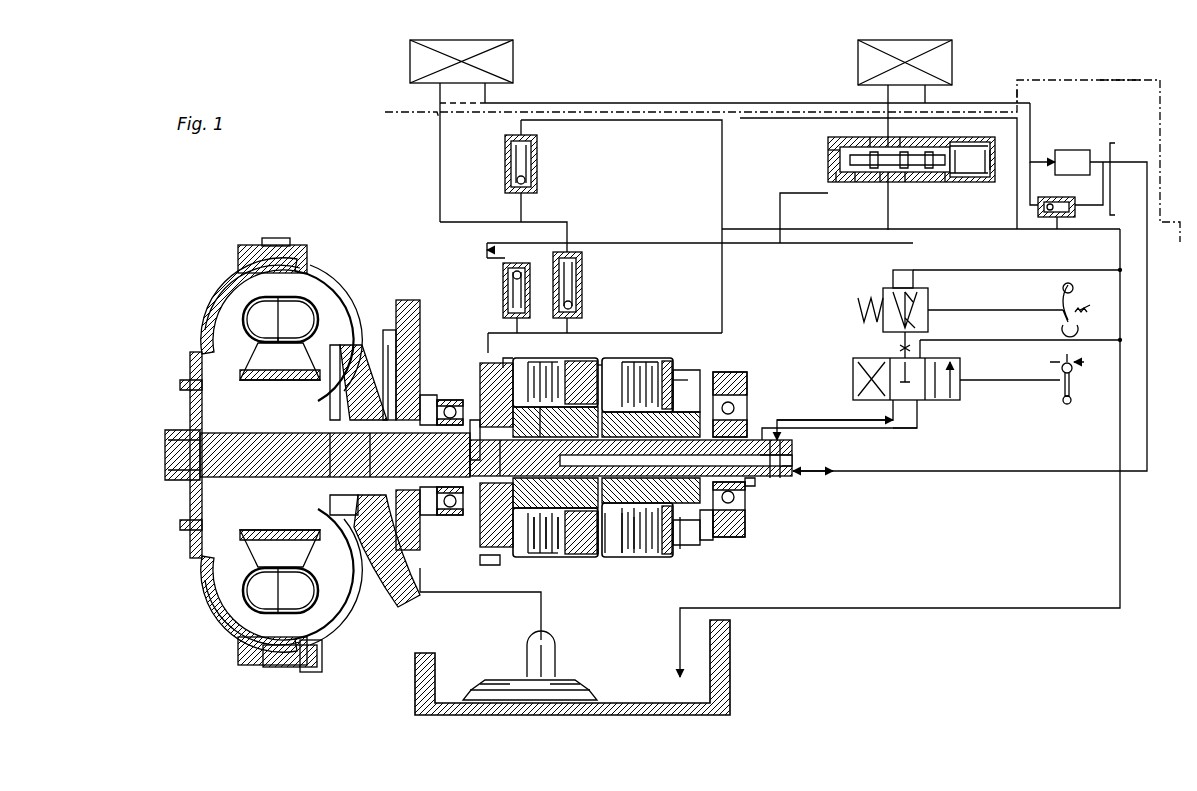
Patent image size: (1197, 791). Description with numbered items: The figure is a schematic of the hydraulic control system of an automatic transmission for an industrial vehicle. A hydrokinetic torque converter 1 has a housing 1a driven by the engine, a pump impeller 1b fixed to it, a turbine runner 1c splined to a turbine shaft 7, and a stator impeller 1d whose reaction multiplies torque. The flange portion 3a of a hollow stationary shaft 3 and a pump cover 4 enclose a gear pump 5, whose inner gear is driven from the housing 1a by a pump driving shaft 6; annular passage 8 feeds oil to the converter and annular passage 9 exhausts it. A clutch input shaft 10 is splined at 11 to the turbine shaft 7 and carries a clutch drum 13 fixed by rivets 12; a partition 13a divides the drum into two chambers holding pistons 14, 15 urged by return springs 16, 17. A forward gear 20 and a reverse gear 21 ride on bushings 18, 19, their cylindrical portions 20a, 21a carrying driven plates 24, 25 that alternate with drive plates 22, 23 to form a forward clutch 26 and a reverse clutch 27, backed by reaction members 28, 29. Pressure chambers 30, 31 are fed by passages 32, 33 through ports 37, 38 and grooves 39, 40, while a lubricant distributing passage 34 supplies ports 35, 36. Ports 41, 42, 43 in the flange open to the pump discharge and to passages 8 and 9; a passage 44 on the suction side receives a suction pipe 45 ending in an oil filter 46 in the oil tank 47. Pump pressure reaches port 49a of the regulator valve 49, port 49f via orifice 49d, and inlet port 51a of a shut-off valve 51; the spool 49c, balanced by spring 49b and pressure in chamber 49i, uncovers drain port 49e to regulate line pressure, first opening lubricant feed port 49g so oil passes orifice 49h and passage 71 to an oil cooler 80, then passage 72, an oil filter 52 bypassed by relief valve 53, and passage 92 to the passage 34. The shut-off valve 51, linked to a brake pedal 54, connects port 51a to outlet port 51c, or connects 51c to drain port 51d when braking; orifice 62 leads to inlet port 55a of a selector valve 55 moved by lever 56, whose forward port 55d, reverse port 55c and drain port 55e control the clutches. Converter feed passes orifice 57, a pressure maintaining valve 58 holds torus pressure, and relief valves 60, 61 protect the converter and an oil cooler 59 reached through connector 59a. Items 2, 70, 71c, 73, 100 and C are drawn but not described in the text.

The hydrokinetic torque converter 1 is at (275, 242).
The converter housing 1a is at (305, 262).
The pump impeller 1b is at (318, 289).
The turbine runner 1c is at (240, 298).
The stator impeller 1d is at (269, 370).
The turbine hub 2 is at (260, 556).
The hollow stationary shaft 3 is at (352, 410).
The flange portion 3a is at (408, 302).
The pump cover 4 is at (400, 300).
The gear pump 5 is at (390, 340).
The pump driving shaft 6 is at (388, 415).
The turbine shaft 7 is at (271, 460).
The annular passage 8 is at (382, 455).
The annular passage 9 is at (339, 455).
The clutch input shaft 10 is at (447, 464).
The spline 11 is at (481, 458).
The rivets 12 is at (605, 560).
The clutch drum 13 is at (618, 558).
The partition 13a is at (588, 560).
The piston 14 is at (575, 555).
The piston 15 is at (640, 560).
The return spring 16 is at (490, 545).
The return spring 17 is at (678, 540).
The bushing 18 is at (492, 358).
The bushing 19 is at (700, 540).
The forward gear 20 is at (500, 555).
The cylindrical portion 20a is at (480, 535).
The reverse gear 21 is at (720, 540).
The cylindrical portion 21a is at (668, 395).
The drive plates 22 is at (560, 365).
The drive plates 23 is at (640, 360).
The driven plates 24 is at (545, 405).
The driven plates 25 is at (745, 410).
The forward clutch 26 is at (535, 555).
The reverse clutch 27 is at (655, 558).
The reaction member 28 is at (520, 362).
The reaction member 29 is at (680, 380).
The hydraulic pressure chamber 30 is at (603, 333).
The hydraulic pressure chamber 31 is at (608, 362).
The hydraulic passage 32 is at (800, 470).
The hydraulic passage 33 is at (800, 428).
The lubricant distributing passage 34 is at (795, 475).
The port 35 is at (510, 458).
The port 36 is at (545, 560).
The port 37 is at (777, 480).
The port 38 is at (795, 450).
The circumferential groove 39 is at (743, 480).
The circumferential groove 40 is at (790, 480).
The port 41 is at (420, 395).
The port 42 is at (440, 400).
The port 43 is at (450, 400).
The passage 44 is at (388, 562).
The suction pipe 45 is at (545, 640).
The oil filter 46 is at (590, 682).
The oil tank 47 is at (730, 690).
The regulator valve 49 is at (828, 163).
The port 49a is at (880, 182).
The spring 49b is at (990, 170).
The spool 49c is at (945, 182).
The orifice 49d is at (855, 185).
The drain port 49e is at (905, 182).
The port 49f is at (836, 185).
The lubricant feed port 49g is at (870, 140).
The flow restricting orifice 49h is at (900, 140).
The chamber 49i is at (828, 150).
The shut-off valve 51 is at (870, 290).
The inlet port 51a is at (928, 295).
The outlet port 51c is at (928, 322).
The drain port 51d is at (893, 275).
The oil filter 52 is at (1065, 150).
The relief valve 53 is at (1060, 229).
The brake pedal 54 is at (1080, 315).
The selector valve 55 is at (853, 375).
The inlet port 55a is at (895, 348).
The reverse port 55c is at (900, 428).
The forward port 55d is at (930, 400).
The drain port 55e is at (960, 365).
The selector lever 56 is at (1090, 397).
The orifice 57 is at (512, 253).
The pressure maintaining valve 58 is at (582, 290).
The oil cooler 59 is at (513, 66).
The connector 59a is at (425, 130).
The relief valve 60 is at (503, 305).
The relief valve 61 is at (537, 178).
The orifice 62 is at (860, 310).
The hydraulic control circuit 70 is at (1095, 75).
The passage 71 is at (945, 137).
The pilot line 71c is at (870, 115).
The passage 72 is at (1000, 95).
The line 73 is at (965, 103).
The oil cooler 80 is at (952, 52).
The passage 92 is at (1147, 392).
The control unit 100 is at (1127, 179).
The control circuit C is at (676, 110).